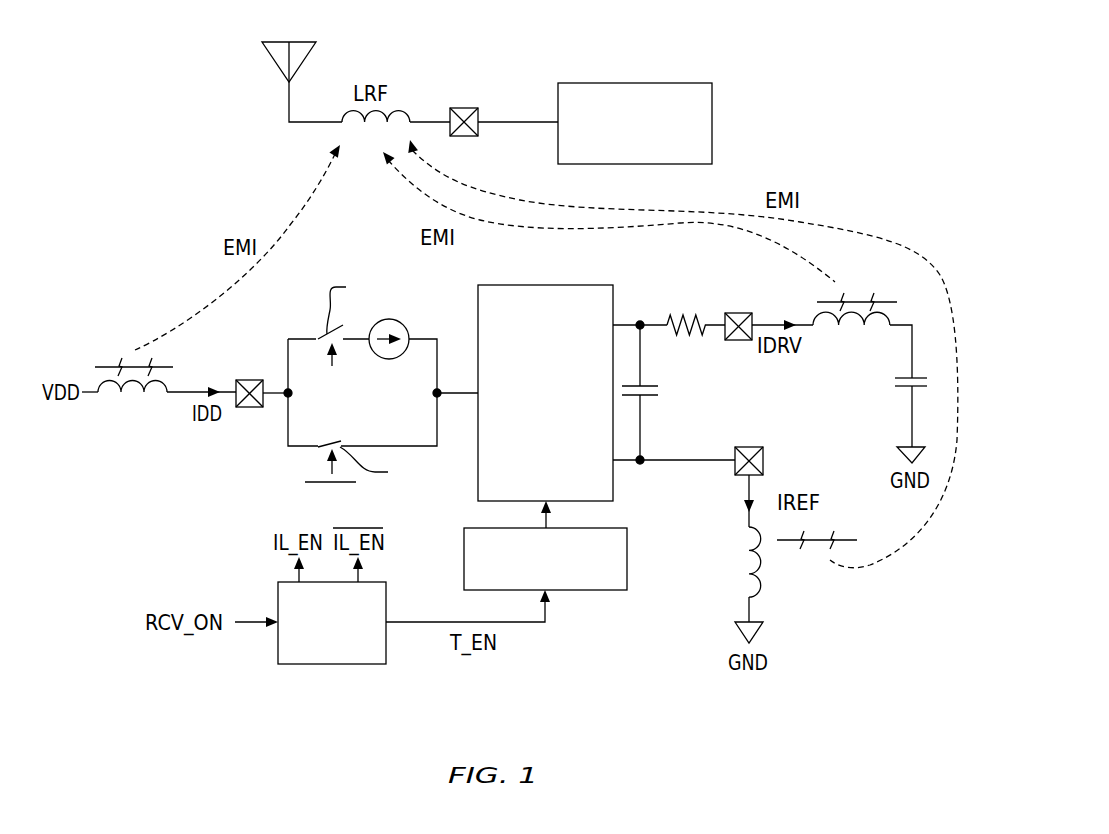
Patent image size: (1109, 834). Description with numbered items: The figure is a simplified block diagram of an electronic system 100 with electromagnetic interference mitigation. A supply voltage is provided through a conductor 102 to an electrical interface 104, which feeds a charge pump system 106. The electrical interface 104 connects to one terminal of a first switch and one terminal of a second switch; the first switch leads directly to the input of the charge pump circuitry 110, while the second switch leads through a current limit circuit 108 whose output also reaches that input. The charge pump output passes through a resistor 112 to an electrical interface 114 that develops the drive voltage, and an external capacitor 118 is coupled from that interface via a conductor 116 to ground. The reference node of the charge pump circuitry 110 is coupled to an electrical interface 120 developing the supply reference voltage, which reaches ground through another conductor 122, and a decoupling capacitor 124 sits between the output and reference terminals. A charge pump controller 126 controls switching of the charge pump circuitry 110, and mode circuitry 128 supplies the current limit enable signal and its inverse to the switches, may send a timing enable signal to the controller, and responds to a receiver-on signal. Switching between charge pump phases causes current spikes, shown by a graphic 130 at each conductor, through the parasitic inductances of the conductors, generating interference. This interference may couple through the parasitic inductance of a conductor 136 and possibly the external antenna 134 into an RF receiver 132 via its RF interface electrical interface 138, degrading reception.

The electronic system 100 is at (177, 189).
The conductor 102 is at (178, 395).
The electrical interface 104 is at (248, 408).
The charge pump system 106 is at (301, 403).
The current limit circuit 108 is at (397, 320).
The charge pump circuitry 110 is at (560, 432).
The resistor 112 is at (672, 320).
The electrical interface 114 is at (716, 313).
The conductor 116 is at (810, 328).
The external capacitor 118 is at (903, 390).
The electrical interface 120 is at (757, 447).
The conductor 122 is at (745, 483).
The decoupling capacitor 124 is at (655, 397).
The charge pump controller 126 is at (464, 545).
The mode circuitry 128 is at (346, 649).
The graphic 130 is at (108, 340).
The RF receiver 132 is at (650, 148).
The external antenna 134 is at (273, 62).
The conductor 136 is at (288, 107).
The RF interface electrical interface 138 is at (478, 137).